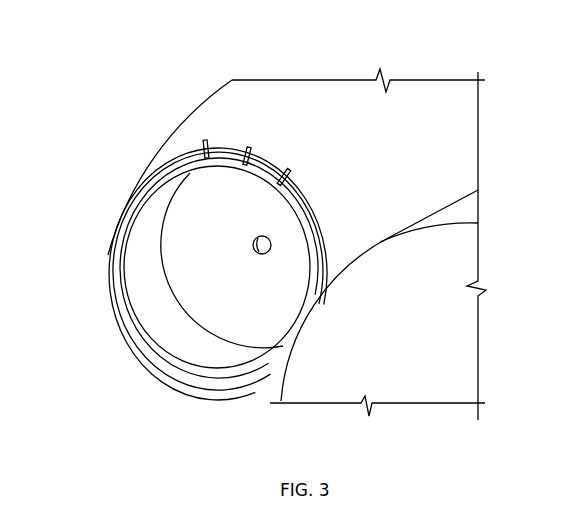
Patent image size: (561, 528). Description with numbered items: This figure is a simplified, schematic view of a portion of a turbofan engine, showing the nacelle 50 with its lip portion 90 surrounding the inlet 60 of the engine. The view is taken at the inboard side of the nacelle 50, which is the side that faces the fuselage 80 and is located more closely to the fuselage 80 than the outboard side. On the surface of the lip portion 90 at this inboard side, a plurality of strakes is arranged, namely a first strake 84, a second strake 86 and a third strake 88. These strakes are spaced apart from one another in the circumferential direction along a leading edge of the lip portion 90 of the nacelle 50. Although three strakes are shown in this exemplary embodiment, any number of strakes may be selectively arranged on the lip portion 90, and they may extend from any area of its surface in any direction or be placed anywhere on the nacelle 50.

The nacelle 50 is at (293, 90).
The inlet 60 is at (153, 284).
The fuselage 80 is at (466, 217).
The first strake 84 is at (203, 148).
The second strake 86 is at (246, 148).
The third strake 88 is at (283, 178).
The lip portion 90 is at (148, 178).